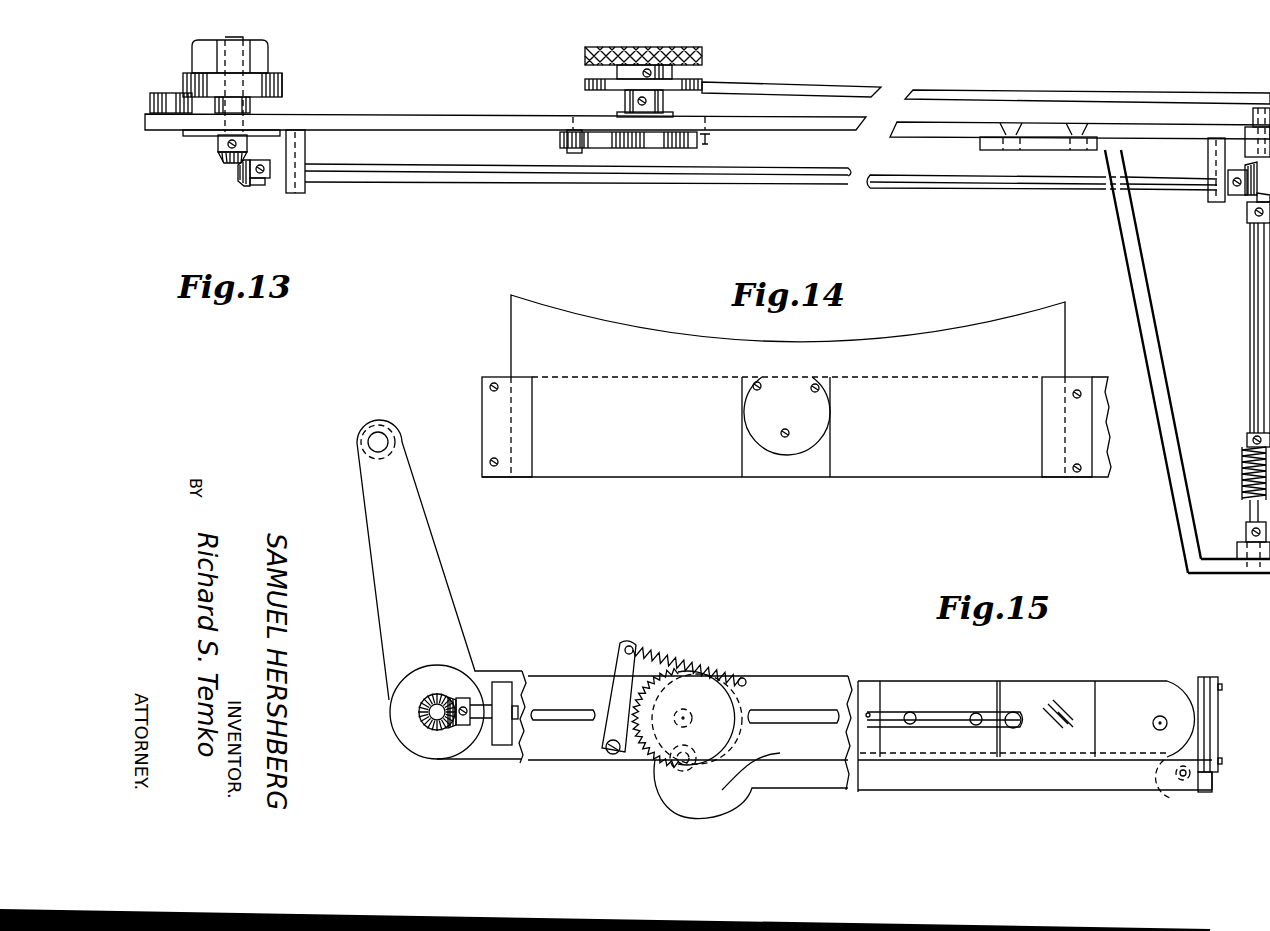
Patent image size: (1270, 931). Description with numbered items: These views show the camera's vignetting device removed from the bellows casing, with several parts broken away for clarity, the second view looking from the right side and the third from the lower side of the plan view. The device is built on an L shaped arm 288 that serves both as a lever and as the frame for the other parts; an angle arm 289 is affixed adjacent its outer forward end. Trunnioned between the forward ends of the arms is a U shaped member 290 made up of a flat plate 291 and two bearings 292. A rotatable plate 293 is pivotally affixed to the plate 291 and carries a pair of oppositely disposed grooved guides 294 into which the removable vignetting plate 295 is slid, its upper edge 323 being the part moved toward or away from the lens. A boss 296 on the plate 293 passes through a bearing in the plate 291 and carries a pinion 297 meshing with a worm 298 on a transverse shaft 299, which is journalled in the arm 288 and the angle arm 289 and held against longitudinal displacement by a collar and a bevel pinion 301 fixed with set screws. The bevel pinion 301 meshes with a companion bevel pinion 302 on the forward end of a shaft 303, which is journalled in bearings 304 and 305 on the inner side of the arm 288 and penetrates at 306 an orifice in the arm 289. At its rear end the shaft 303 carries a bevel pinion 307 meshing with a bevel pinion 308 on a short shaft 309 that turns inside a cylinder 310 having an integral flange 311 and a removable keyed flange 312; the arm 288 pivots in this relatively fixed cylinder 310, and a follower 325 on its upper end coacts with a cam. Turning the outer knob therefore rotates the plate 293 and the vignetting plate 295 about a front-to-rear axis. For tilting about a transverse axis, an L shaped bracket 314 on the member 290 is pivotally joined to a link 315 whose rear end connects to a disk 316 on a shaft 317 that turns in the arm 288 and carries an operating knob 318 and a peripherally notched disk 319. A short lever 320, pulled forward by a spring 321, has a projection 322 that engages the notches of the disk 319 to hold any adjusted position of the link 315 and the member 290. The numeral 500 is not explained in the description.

In FIG. 13, the L shaped arm 288 is at (443, 115).
In FIG. 15, the L shaped arm 288 is at (433, 584).
In FIG. 13, the angle arm 289 is at (1126, 237).
In FIG. 13, the U shaped member 290 is at (1266, 318).
In FIG. 13, the flat plate 291 is at (1266, 358).
In FIG. 15, the flat plate 291 is at (1206, 677).
In FIG. 13, the bearings 292 is at (1250, 142).
In FIG. 15, the bearings 292 is at (1194, 700).
In FIG. 13, the rotatable plate 293 is at (1253, 613).
In FIG. 14, the rotatable plate 293 is at (786, 478).
In FIG. 14, the grooved guides 294 is at (524, 480).
In FIG. 14, the vignetting plate 295 is at (650, 478).
In FIG. 13, the boss 296 is at (1266, 418).
In FIG. 14, the boss 296 is at (802, 432).
In FIG. 13, the pinion 297 is at (1249, 470).
In FIG. 13, the worm 298 is at (1250, 441).
In FIG. 13, the shaft 299 is at (1258, 388).
In FIG. 13, the bevel pinion 301 is at (1255, 218).
In FIG. 13, the bevel pinion 302 is at (1240, 196).
In FIG. 13, the shaft 303 is at (739, 184).
In FIG. 13, the bearing 304 is at (300, 196).
In FIG. 13, the bearing 305 is at (1215, 201).
In FIG. 13, the orifice penetration point 306 is at (1106, 182).
In FIG. 15, the orifice penetration point 306 is at (1013, 712).
In FIG. 13, the bevel pinion 307 is at (249, 188).
In FIG. 13, the bevel pinion 308 is at (222, 160).
In FIG. 13, the short shaft 309 is at (242, 63).
In FIG. 13, the cylinder 310 is at (252, 103).
In FIG. 13, the integral flange 311 is at (190, 134).
In FIG. 13, the removable flange 312 is at (282, 85).
In FIG. 13, the L shaped bracket 314 is at (1269, 108).
In FIG. 15, the L shaped bracket 314 is at (1178, 798).
In FIG. 13, the link 315 is at (1050, 88).
In FIG. 15, the link 315 is at (940, 790).
In FIG. 13, the disk 316 is at (585, 84).
In FIG. 15, the disk 316 is at (660, 770).
In FIG. 13, the shaft 317 is at (625, 100).
In FIG. 15, the shaft 317 is at (683, 718).
In FIG. 13, the operating knob 318 is at (703, 57).
In FIG. 15, the peripherally notched disk 319 is at (663, 748).
In FIG. 15, the short lever 320 is at (622, 660).
In FIG. 15, the spring 321 is at (665, 652).
In FIG. 15, the projection 322 is at (630, 705).
In FIG. 14, the upper edge 323 is at (628, 330).
In FIG. 15, the follower 325 is at (378, 442).
In FIG. 13, the collar 500 is at (1250, 520).